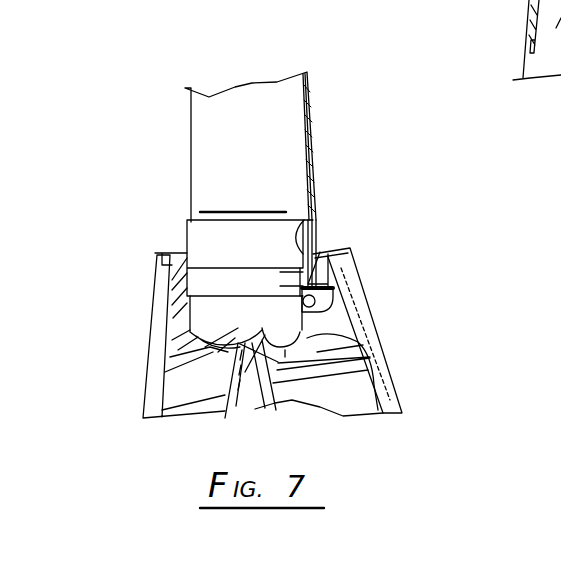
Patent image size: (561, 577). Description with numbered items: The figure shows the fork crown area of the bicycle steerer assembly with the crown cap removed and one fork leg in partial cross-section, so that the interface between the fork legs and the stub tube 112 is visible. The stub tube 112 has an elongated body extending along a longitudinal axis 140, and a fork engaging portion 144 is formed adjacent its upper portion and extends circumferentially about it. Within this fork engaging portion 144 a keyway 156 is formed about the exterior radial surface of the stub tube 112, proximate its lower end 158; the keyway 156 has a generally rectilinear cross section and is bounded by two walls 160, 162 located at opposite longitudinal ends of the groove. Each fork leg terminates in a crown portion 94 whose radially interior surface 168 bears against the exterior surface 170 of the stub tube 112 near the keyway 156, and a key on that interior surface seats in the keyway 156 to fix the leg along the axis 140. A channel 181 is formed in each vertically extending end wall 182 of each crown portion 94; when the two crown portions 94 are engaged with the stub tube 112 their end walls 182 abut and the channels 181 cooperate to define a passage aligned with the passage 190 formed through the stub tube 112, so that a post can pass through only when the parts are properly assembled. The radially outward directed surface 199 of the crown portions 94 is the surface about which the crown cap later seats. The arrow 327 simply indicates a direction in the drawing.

The crown portion 94 is at (128, 308).
The stub tube 112 is at (307, 86).
The longitudinal axis 140 is at (247, 38).
The fork engaging portion 144 is at (131, 383).
The keyway 156 is at (217, 268).
The lower end 158 is at (200, 369).
The wall 160 is at (265, 257).
The wall 162 is at (303, 298).
The radially interior surface 168 is at (314, 199).
The exterior surface 170 is at (232, 318).
The channel 181 is at (363, 274).
The end wall 182 is at (320, 252).
The passage 190 is at (232, 398).
The radially outward directed surface 199 is at (337, 296).
The direction of movement 327 is at (467, 167).